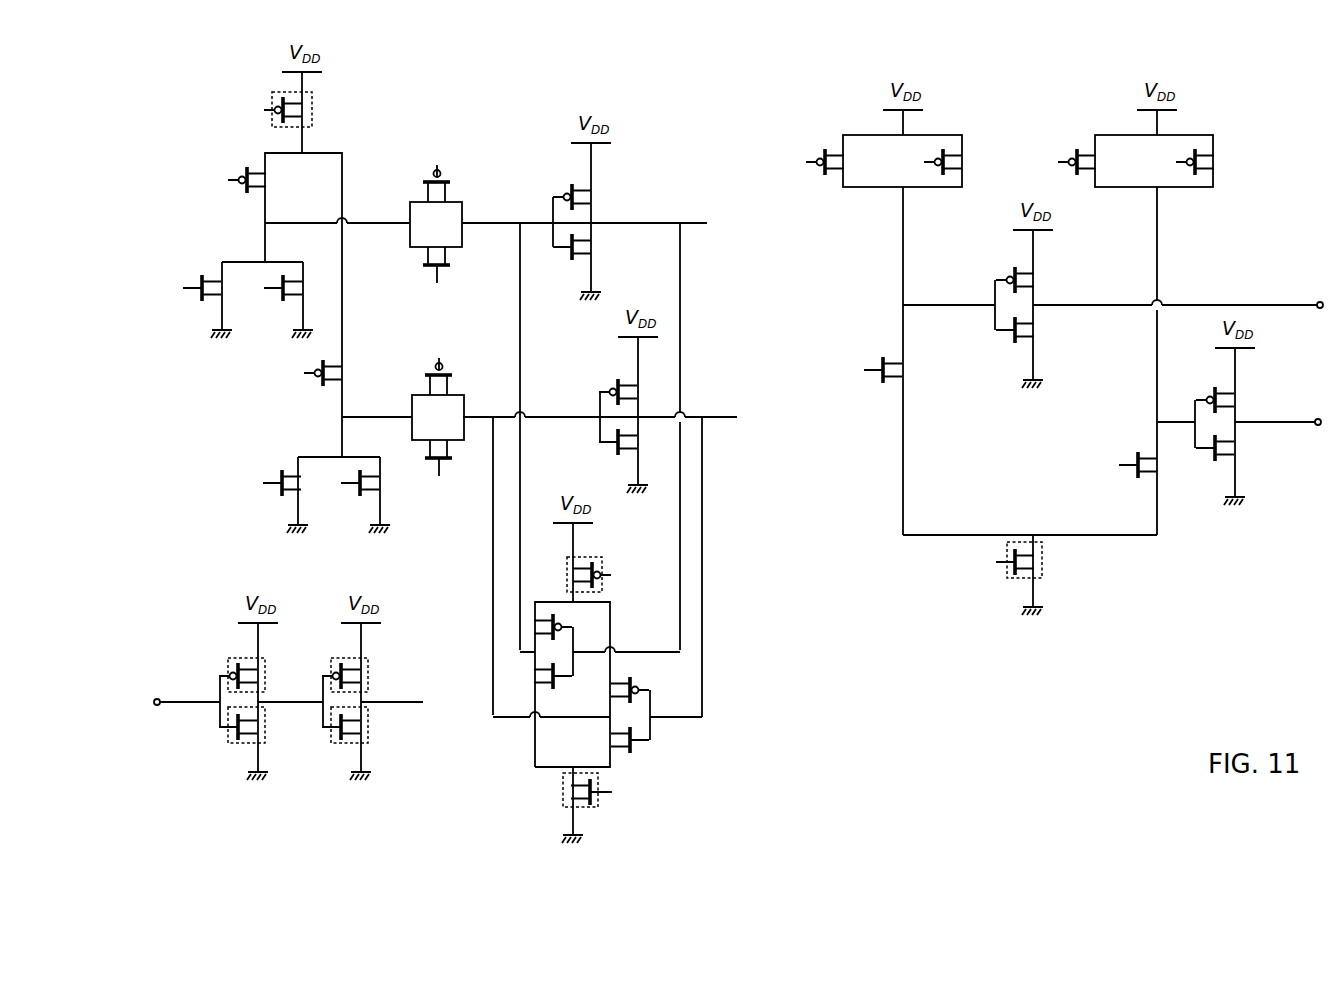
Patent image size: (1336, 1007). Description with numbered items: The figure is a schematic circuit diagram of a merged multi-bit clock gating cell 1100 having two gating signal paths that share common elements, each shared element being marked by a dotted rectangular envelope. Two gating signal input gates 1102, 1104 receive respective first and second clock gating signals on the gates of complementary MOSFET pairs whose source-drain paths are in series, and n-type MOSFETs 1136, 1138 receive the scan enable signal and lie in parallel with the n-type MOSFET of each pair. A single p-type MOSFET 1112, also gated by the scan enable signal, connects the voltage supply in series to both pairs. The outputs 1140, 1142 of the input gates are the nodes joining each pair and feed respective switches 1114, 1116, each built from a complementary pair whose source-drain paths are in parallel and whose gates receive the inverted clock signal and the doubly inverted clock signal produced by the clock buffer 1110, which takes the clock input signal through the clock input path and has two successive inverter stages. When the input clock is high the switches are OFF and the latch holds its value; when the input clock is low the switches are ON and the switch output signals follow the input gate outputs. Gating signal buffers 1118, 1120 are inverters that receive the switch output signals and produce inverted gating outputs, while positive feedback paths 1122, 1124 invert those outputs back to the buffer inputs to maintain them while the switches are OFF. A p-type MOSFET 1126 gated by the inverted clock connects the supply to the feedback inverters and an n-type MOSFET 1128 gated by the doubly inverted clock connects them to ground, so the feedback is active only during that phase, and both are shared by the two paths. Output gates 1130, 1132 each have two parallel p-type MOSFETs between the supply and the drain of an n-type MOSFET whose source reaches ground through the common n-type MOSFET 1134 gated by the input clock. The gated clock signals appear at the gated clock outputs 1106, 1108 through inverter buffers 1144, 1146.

The multi-bit clock gating cell 1100 is at (663, 18).
The gating signal input gate 1102 is at (244, 301).
The gating signal input gate 1104 is at (287, 445).
The gated clock output 1106 is at (819, 105).
The gated clock output 1108 is at (1086, 105).
The clock buffer 1110 is at (192, 759).
The p-type MOSFET 1112 is at (312, 108).
The switch 1114 is at (485, 193).
The switch 1116 is at (408, 386).
The gating signal buffer 1118 is at (622, 198).
The gating signal buffer 1120 is at (594, 373).
The positive feedback path 1122 is at (514, 624).
The positive feedback path 1124 is at (676, 686).
The p-type MOSFET 1126 is at (603, 560).
The n-type MOSFET 1128 is at (562, 798).
The output gate 1130 is at (832, 187).
The output gate 1132 is at (1145, 442).
The n-type MOSFET 1134 is at (1043, 565).
The n-type MOSFET 1136 is at (264, 310).
The n-type MOSFET 1138 is at (338, 501).
The output of input gate 1140 is at (390, 220).
The output of input gate 1142 is at (386, 414).
The buffer 1144 is at (987, 266).
The buffer 1146 is at (1254, 440).